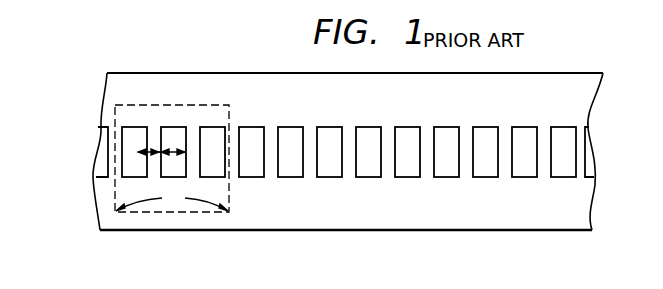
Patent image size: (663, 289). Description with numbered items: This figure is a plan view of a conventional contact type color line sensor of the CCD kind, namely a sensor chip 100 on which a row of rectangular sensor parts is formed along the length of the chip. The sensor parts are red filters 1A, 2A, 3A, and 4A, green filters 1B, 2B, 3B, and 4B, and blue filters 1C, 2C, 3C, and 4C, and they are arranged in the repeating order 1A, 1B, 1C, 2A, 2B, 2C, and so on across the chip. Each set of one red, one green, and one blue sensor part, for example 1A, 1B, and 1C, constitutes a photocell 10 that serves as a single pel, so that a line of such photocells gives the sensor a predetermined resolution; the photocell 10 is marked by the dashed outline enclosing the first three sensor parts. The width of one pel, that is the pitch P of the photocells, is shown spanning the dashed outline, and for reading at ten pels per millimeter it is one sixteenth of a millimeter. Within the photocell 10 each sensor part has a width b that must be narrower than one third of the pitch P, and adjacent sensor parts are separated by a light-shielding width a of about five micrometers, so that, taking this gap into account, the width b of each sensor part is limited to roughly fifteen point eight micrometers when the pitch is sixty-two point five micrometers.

The sensor chip 100 is at (523, 216).
The photocell 10 is at (138, 213).
The red filter sensor part 1A is at (136, 127).
The green filter sensor part 1B is at (175, 127).
The blue filter sensor part 1C is at (215, 127).
The red filter sensor part 2A is at (253, 127).
The green filter sensor part 2B is at (292, 127).
The blue filter sensor part 2C is at (331, 127).
The red filter sensor part 3A is at (370, 127).
The green filter sensor part 3B is at (409, 127).
The blue filter sensor part 3C is at (448, 127).
The red filter sensor part 4A is at (487, 127).
The green filter sensor part 4B is at (526, 127).
The blue filter sensor part 4C is at (566, 127).
The light-shielding width a is at (147, 160).
The sensor part width b is at (161, 142).
The pitch of pels P is at (172, 199).